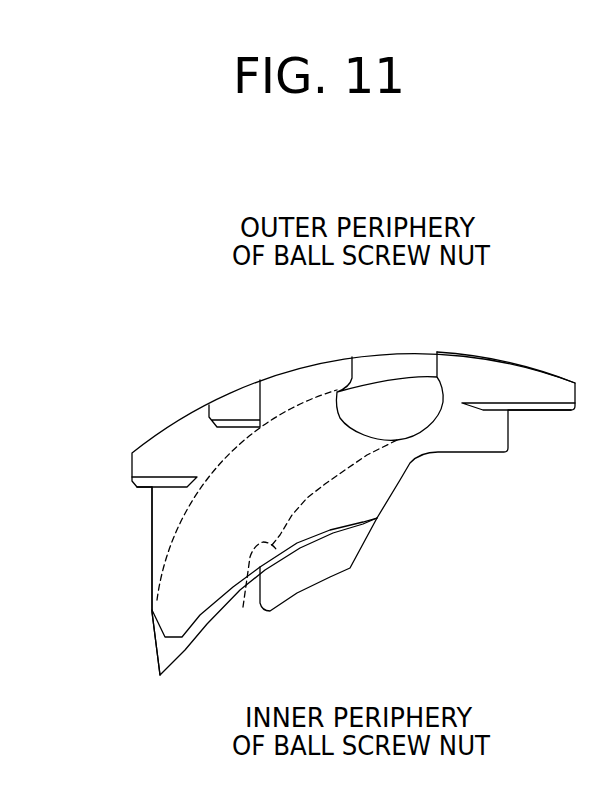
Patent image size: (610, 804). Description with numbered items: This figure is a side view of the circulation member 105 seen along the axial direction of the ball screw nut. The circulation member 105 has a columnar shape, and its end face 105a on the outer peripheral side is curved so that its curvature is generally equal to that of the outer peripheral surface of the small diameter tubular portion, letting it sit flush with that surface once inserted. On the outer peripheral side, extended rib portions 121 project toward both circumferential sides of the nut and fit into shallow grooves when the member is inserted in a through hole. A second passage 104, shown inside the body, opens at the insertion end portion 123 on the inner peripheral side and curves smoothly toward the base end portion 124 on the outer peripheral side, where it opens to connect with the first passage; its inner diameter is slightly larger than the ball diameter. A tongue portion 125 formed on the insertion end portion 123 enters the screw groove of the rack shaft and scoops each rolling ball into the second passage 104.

The circulation member 105 is at (184, 344).
The end face 105a is at (482, 357).
The extended rib portion 121 is at (131, 463).
The insertion end portion 123 is at (150, 574).
The base end portion 124 is at (315, 372).
The tongue portion 125 is at (312, 577).
The second passage 104 is at (248, 589).